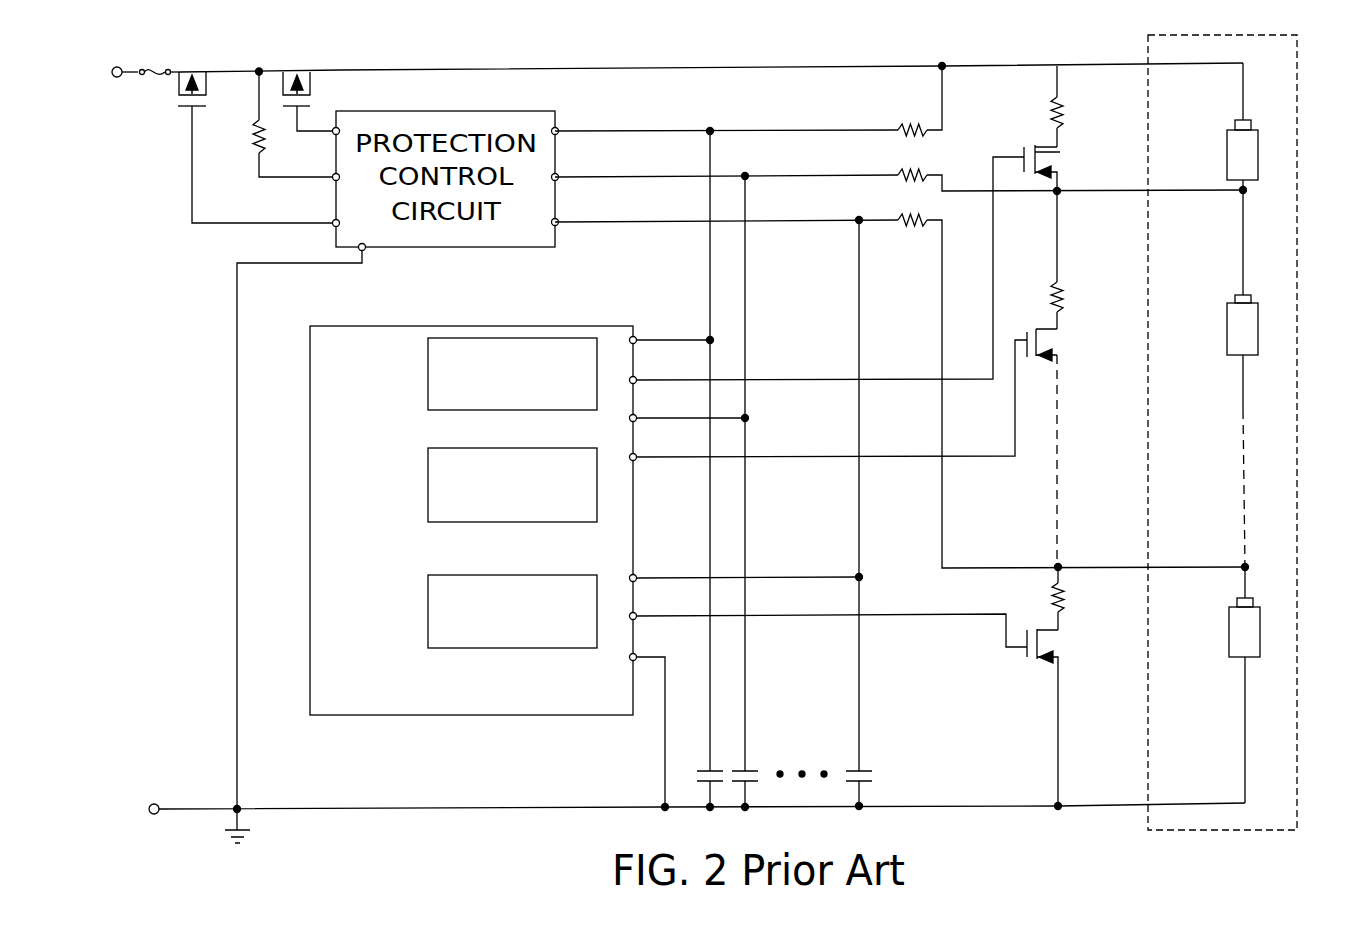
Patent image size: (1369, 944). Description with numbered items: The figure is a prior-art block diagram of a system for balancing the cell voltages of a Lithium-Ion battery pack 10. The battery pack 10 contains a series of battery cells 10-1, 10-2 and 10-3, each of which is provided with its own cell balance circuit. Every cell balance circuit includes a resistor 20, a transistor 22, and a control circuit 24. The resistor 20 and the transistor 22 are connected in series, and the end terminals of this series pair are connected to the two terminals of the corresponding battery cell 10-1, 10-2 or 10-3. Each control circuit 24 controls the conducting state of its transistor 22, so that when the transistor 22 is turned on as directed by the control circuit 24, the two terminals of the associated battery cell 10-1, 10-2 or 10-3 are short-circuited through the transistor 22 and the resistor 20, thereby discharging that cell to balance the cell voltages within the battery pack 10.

The Lithium-Ion battery pack 10 is at (1249, 432).
The battery cell 10-1 is at (1227, 155).
The battery cell 10-2 is at (1227, 328).
The battery cell 10-3 is at (1229, 630).
The resistor 20 is at (1068, 97).
The transistor 22 is at (1060, 153).
The control circuit 24 is at (428, 390).